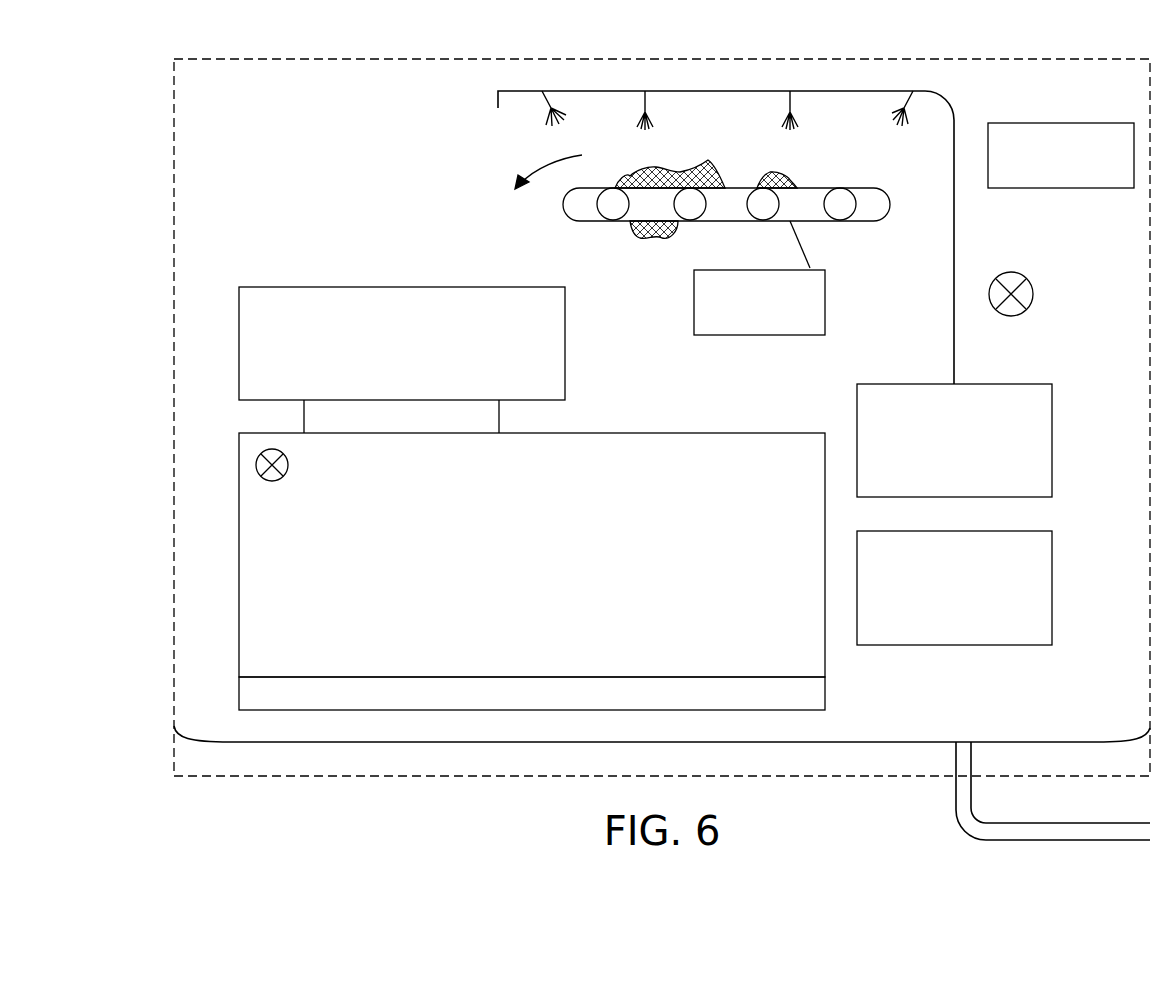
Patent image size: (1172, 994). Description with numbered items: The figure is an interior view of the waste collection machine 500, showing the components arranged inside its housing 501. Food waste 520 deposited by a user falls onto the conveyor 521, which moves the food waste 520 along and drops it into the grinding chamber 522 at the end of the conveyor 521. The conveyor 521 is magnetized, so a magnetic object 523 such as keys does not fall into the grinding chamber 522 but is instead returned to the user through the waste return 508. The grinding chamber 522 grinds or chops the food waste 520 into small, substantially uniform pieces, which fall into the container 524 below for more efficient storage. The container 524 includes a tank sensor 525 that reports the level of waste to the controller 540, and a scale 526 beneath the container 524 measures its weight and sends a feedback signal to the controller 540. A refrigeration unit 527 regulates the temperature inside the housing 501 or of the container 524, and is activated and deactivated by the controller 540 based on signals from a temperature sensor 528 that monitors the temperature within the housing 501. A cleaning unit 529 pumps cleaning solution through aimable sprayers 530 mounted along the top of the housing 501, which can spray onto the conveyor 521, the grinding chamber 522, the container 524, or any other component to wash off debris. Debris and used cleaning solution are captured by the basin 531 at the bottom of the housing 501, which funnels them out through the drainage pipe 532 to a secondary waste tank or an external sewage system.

The machine 500 is at (142, 159).
The housing 501 is at (362, 75).
The waste return 508 is at (817, 328).
The food waste 520 is at (706, 166).
The conveyor 521 is at (873, 197).
The grinding chamber 522 is at (272, 303).
The magnetic object 523 is at (648, 240).
The container 524 is at (758, 448).
The tank sensor 525 is at (258, 460).
The scale 526 is at (818, 695).
The refrigeration unit 527 is at (1044, 540).
The temperature sensor 528 is at (1033, 290).
The cleaning unit 529 is at (1044, 393).
The sprayers 530 is at (541, 95).
The basin 531 is at (368, 742).
The drainage pipe 532 is at (968, 827).
The controller 540 is at (1004, 180).